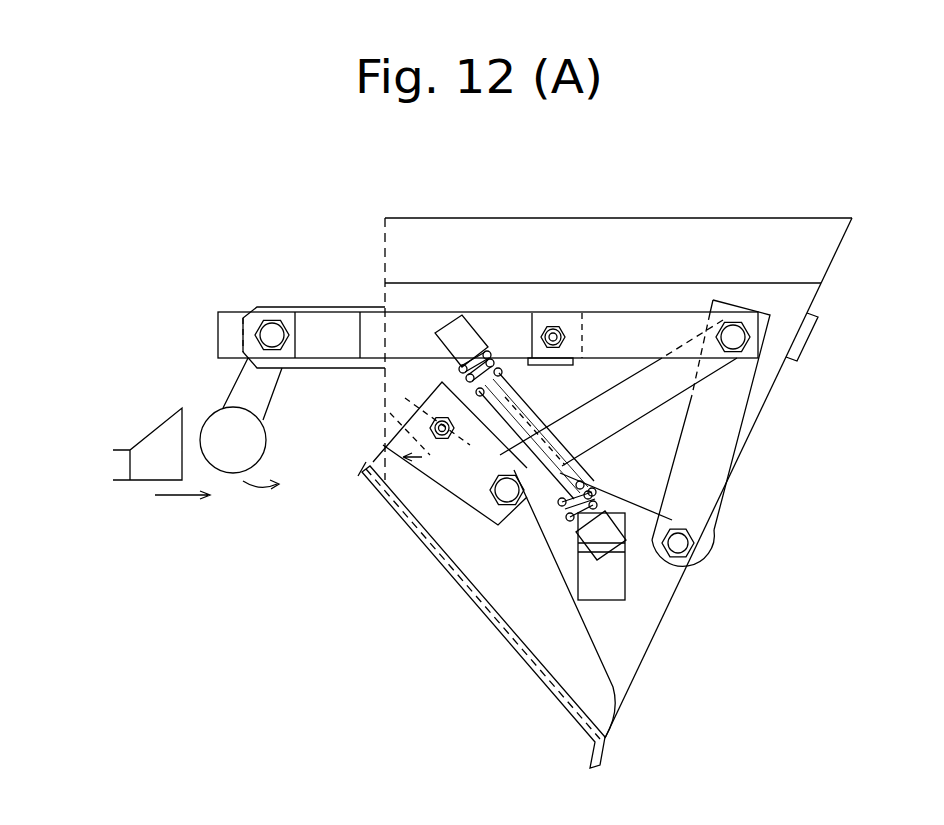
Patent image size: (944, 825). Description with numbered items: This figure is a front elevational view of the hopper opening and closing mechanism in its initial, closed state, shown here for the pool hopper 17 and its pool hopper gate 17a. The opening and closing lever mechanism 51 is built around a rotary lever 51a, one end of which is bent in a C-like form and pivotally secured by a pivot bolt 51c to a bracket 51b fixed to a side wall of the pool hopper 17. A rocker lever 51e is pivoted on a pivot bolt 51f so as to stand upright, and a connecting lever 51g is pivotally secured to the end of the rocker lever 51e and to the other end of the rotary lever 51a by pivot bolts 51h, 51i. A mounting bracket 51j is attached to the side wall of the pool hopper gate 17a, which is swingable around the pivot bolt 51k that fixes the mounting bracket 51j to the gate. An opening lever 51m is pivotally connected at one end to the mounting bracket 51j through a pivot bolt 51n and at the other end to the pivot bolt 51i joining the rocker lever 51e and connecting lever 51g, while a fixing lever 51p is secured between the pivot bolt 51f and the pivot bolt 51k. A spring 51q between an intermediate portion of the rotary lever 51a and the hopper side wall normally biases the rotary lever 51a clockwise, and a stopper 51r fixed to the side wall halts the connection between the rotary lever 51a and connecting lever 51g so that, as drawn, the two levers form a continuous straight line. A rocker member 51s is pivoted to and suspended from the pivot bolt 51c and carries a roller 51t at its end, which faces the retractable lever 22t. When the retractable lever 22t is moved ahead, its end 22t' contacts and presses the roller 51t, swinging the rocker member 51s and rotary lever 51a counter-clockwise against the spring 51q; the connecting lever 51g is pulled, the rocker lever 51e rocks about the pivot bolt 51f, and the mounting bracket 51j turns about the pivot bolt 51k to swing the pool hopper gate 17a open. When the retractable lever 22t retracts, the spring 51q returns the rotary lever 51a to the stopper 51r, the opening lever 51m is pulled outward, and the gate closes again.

The pool hopper 17 is at (381, 230).
The pool hopper gate 17a is at (513, 637).
The retractable lever 22t is at (161, 475).
The end of the retractable lever 22t' is at (137, 399).
The opening and closing lever mechanism 51 is at (762, 402).
The rotary lever 51a is at (336, 345).
The bracket 51b is at (297, 366).
The pivot bolt 51c is at (268, 328).
The rocker lever 51e is at (730, 445).
The pivot bolt 51f is at (688, 543).
The connecting lever 51g is at (681, 324).
The pivot bolt 51h is at (553, 322).
The pivot bolt 51i is at (735, 325).
The mounting bracket 51j is at (442, 457).
The pivot bolt 51k is at (438, 417).
The opening lever 51m is at (600, 414).
The pivot bolt 51n is at (513, 530).
The fixing lever 51p is at (637, 545).
The spring 51q is at (226, 320).
The stopper 51r is at (540, 366).
The rocker member 51s is at (228, 408).
The roller 51t is at (236, 467).